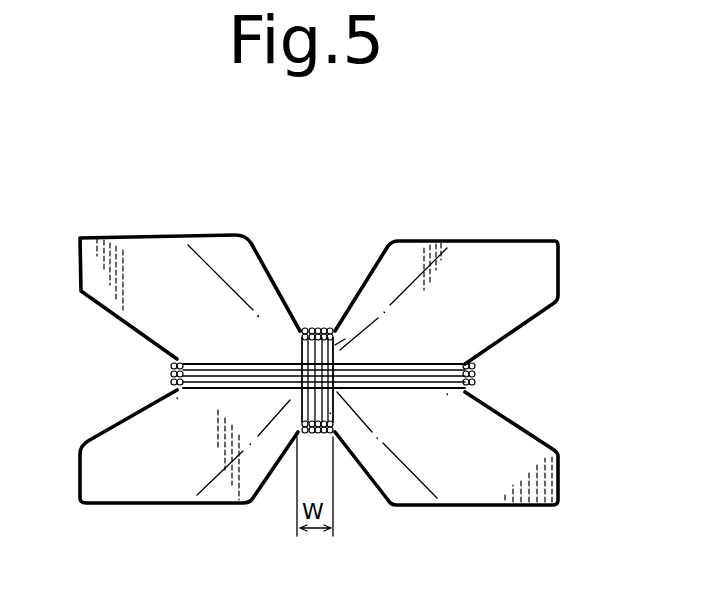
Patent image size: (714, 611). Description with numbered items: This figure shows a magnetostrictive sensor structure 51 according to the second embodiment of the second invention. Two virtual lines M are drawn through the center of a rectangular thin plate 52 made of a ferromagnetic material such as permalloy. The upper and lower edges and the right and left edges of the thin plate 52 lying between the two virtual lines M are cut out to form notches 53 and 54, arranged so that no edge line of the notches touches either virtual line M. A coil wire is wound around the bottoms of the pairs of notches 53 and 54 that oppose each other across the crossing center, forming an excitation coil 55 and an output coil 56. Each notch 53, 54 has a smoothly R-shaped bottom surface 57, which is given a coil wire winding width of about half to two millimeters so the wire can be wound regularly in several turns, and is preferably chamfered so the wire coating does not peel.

The magnetostrictive sensor structure 51 is at (319, 318).
The thin plate 52 is at (142, 249).
The notch 53 is at (315, 268).
The notch 54 is at (138, 377).
The excitation coil 55 is at (346, 340).
The output coil 56 is at (200, 378).
The bottom surface 57 is at (258, 316).
The virtual line M is at (212, 270).